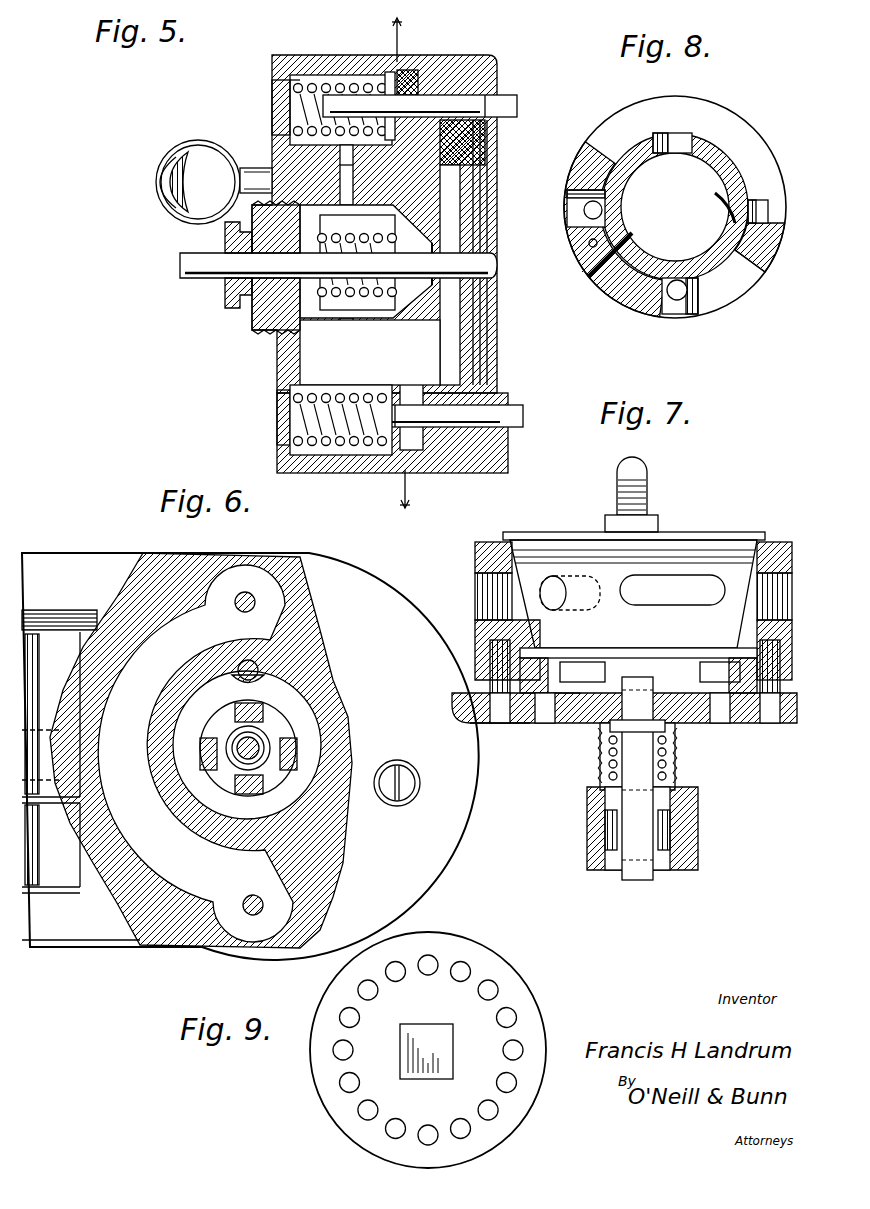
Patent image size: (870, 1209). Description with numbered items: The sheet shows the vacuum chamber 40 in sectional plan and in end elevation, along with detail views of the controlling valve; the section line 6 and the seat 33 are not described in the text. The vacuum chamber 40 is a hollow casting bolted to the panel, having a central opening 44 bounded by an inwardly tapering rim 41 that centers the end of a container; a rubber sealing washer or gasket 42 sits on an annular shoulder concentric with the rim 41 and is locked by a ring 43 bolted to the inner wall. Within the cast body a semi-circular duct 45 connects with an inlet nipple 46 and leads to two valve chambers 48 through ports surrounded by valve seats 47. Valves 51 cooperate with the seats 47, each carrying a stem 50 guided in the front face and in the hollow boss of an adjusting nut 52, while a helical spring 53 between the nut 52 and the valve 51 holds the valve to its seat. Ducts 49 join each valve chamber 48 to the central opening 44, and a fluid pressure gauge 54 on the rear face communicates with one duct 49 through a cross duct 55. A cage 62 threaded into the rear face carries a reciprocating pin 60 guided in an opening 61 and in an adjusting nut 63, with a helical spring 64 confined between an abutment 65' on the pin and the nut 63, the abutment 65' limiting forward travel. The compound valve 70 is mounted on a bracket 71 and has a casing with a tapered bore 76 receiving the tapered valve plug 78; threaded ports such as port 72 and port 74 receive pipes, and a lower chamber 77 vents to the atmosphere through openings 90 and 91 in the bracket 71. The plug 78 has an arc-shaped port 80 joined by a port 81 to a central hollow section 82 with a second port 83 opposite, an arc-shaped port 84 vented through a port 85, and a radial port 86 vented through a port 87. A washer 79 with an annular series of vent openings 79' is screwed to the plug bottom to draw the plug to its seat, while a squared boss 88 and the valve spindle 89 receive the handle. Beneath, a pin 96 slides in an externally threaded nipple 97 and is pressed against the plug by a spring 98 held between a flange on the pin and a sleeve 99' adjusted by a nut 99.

In FIG. 5, the section line 6- 6 is at (401, 264).
In FIG. 5, the spring seat 33 is at (294, 66).
In FIG. 5, the vacuum chamber 40 is at (492, 470).
In FIG. 6, the vacuum chamber 40 is at (388, 620).
In FIG. 5, the inwardly tapering rim 41 is at (497, 228).
In FIG. 5, the sealing washer or gasket 42 is at (482, 140).
In FIG. 5, the ring 43 is at (475, 198).
In FIG. 5, the central opening 44 is at (440, 348).
In FIG. 6, the central opening 44 is at (247, 754).
In FIG. 5, the semi-circular duct 45 is at (430, 82).
In FIG. 6, the semi-circular duct 45 is at (195, 753).
In FIG. 6, the inlet nipple 46 is at (97, 807).
In FIG. 5, the valve seats 47 is at (388, 72).
In FIG. 5, the valve chambers 48 is at (322, 75).
In FIG. 5, the ducts 49 is at (310, 150).
In FIG. 5, the valve stem 50 is at (490, 100).
In FIG. 6, the valve stem 50 is at (237, 608).
In FIG. 5, the valves 51 is at (408, 88).
In FIG. 5, the adjusting nut 52 is at (272, 93).
In FIG. 5, the helical spring 53 is at (315, 456).
In FIG. 5, the fluid pressure gauge 54 is at (199, 152).
In FIG. 5, the cross duct 55 is at (345, 168).
In FIG. 5, the pin 60 is at (490, 262).
In FIG. 6, the pin 60 is at (240, 765).
In FIG. 5, the opening 61 is at (433, 268).
In FIG. 5, the cage 62 is at (264, 332).
In FIG. 6, the cage 62 is at (290, 732).
In FIG. 5, the adjusting nut 63 is at (234, 306).
In FIG. 5, the helical spring 64 is at (345, 316).
In FIG. 6, the helical spring 64 is at (267, 732).
In FIG. 5, the abutment 65' is at (488, 275).
In FIG. 7, the compound valve 70 is at (482, 655).
In FIG. 7, the bracket 71 is at (573, 724).
In FIG. 7, the threaded port 72 is at (478, 608).
In FIG. 7, the threaded port 74 is at (635, 667).
In FIG. 7, the tapered bore 76 is at (475, 562).
In FIG. 7, the chamber 77 is at (638, 670).
In FIG. 7, the valve plug 78 is at (705, 535).
In FIG. 7, the washer 79 is at (711, 675).
In FIG. 9, the washer 79 is at (452, 1050).
In FIG. 9, the vent openings 79' is at (428, 1027).
In FIG. 8, the arc-shaped port 80 is at (758, 148).
In FIG. 8, the port 81 is at (683, 140).
In FIG. 8, the central hollow section 82 is at (750, 206).
In FIG. 8, the second port 83 is at (610, 290).
In FIG. 7, the second port 83 is at (566, 598).
In FIG. 8, the arc-shaped port 84 is at (742, 283).
In FIG. 7, the arc-shaped port 84 is at (636, 585).
In FIG. 8, the port 85 is at (681, 298).
In FIG. 8, the radial port 86 is at (627, 227).
In FIG. 8, the port 87 is at (605, 222).
In FIG. 7, the squared boss 88 is at (656, 520).
In FIG. 7, the valve spindle 89 is at (649, 483).
In FIG. 7, the opening 90 is at (715, 725).
In FIG. 7, the opening 91 is at (550, 727).
In FIG. 7, the pin 96 is at (620, 762).
In FIG. 7, the externally threaded nipple 97 is at (676, 768).
In FIG. 7, the spring 98 is at (672, 752).
In FIG. 7, the nut 99 is at (666, 828).
In FIG. 7, the sleeve 99' is at (678, 830).